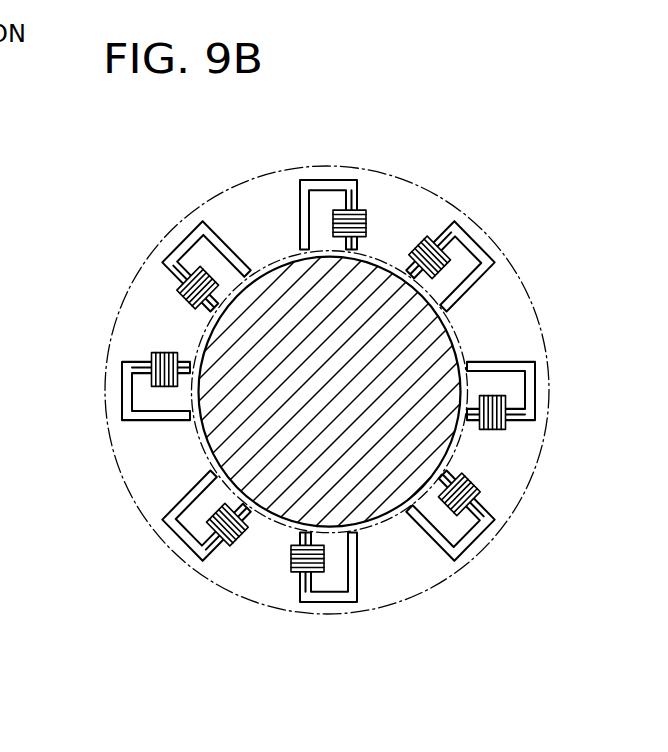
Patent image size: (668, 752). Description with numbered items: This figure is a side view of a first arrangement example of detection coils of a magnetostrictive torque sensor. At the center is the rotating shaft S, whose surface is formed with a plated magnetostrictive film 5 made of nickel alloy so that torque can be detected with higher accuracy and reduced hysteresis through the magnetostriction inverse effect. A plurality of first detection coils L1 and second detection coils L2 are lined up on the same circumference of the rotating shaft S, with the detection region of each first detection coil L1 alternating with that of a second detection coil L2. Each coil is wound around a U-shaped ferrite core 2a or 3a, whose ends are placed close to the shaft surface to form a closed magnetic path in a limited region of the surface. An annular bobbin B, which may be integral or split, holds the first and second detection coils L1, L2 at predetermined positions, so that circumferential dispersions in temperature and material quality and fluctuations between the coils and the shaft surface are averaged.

The U-shaped ferrite core 2a is at (321, 180).
The U-shaped ferrite core 3a is at (473, 238).
The first detection coil L1 is at (367, 222).
The second detection coil L2 is at (422, 243).
The rotating shaft S is at (341, 391).
The magnetostrictive film 5 is at (452, 337).
The bobbin B is at (120, 475).